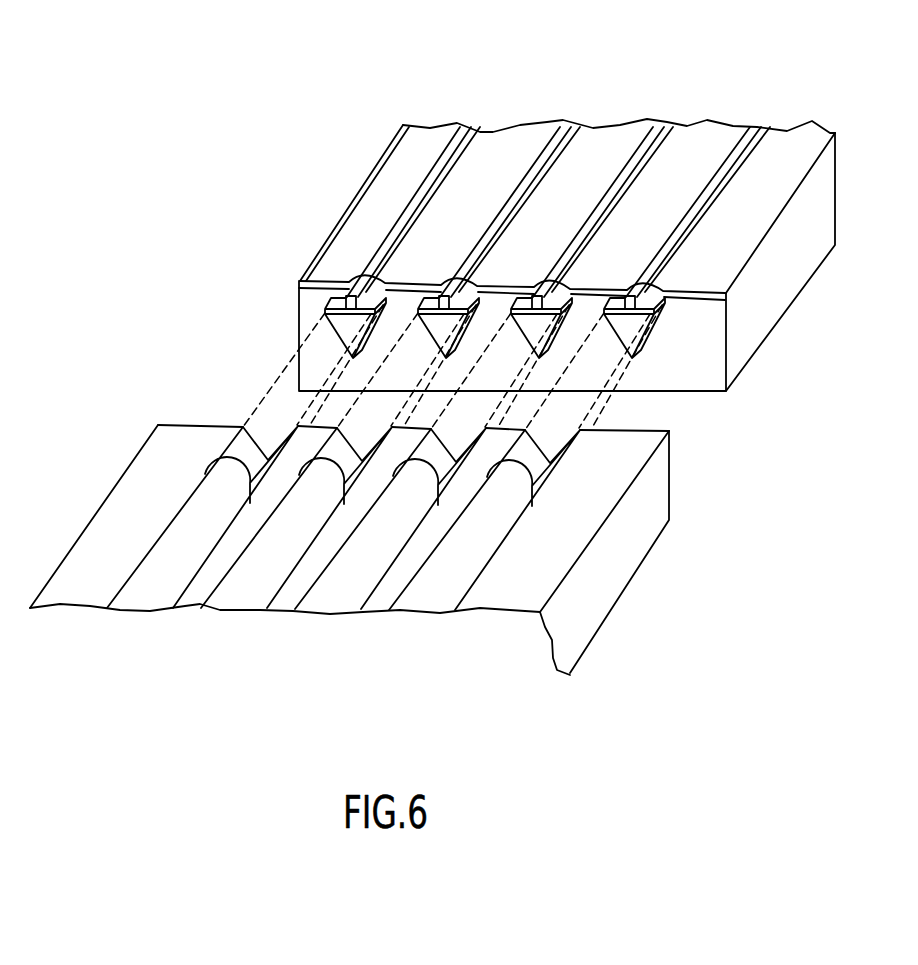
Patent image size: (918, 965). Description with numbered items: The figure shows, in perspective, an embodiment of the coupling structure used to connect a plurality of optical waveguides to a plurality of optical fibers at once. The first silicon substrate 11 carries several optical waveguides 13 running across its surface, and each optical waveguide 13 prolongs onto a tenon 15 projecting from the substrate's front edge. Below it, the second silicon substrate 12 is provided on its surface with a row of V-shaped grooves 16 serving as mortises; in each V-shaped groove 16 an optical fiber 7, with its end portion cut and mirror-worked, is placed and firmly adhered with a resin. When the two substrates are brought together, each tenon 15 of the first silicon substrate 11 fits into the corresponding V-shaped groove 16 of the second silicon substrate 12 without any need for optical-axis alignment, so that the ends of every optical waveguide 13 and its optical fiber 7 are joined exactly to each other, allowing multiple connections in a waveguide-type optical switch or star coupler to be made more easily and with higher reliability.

The first silicon substrate 11 is at (430, 132).
The optical waveguide 13 is at (420, 195).
The tenon 15 is at (653, 333).
The V-shaped groove 16 is at (238, 427).
The second silicon substrate 12 is at (670, 484).
The optical fiber 7 is at (468, 553).